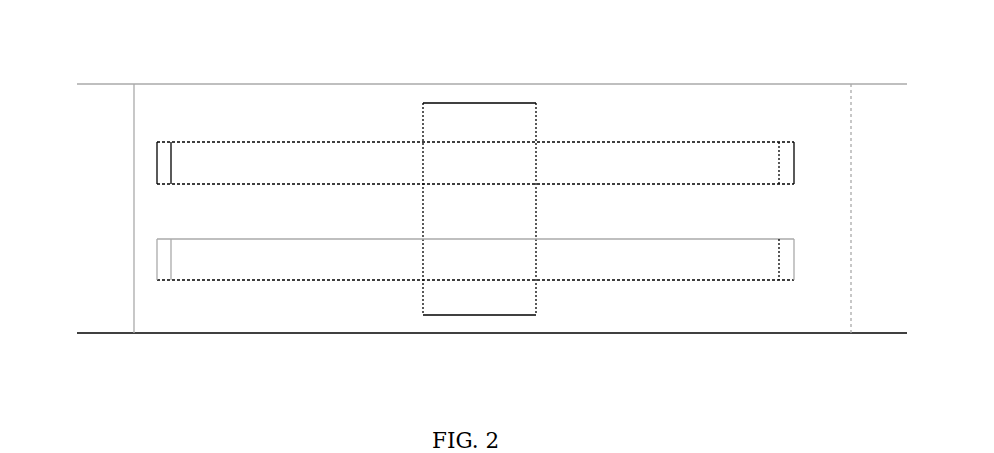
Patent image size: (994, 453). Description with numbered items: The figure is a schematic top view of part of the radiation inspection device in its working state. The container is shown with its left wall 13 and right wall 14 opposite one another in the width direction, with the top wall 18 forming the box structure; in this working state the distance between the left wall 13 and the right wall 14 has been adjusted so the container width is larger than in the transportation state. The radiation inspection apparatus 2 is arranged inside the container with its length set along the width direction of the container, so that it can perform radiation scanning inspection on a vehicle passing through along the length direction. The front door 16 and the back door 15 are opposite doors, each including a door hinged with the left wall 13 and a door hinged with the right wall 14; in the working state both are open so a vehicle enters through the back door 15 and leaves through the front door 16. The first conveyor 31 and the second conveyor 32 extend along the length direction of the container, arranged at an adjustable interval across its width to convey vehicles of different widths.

The radiation inspection apparatus 2 is at (483, 125).
The left wall 13 is at (360, 333).
The right wall 14 is at (313, 84).
The back door 15 is at (873, 84).
The front door 16 is at (109, 84).
The top wall 18 is at (142, 120).
The first conveyor 31 is at (673, 268).
The second conveyor 32 is at (683, 157).